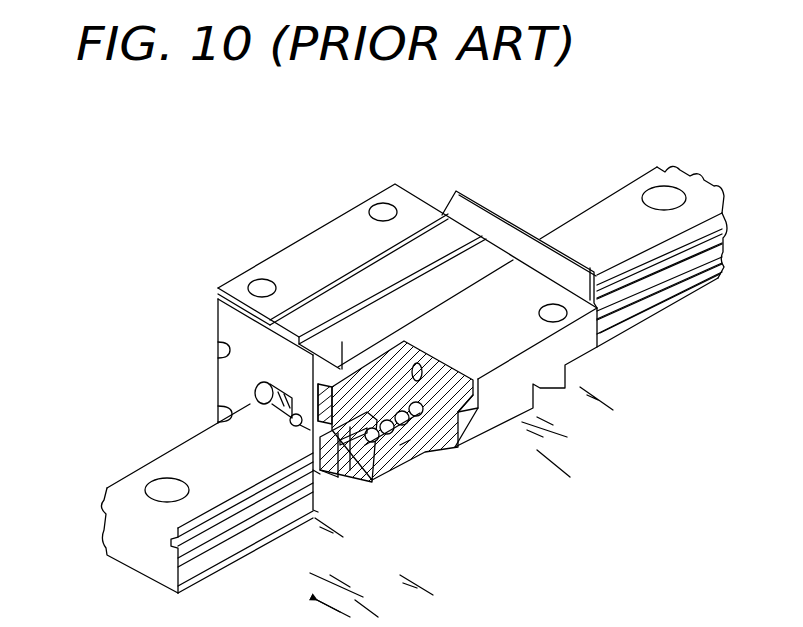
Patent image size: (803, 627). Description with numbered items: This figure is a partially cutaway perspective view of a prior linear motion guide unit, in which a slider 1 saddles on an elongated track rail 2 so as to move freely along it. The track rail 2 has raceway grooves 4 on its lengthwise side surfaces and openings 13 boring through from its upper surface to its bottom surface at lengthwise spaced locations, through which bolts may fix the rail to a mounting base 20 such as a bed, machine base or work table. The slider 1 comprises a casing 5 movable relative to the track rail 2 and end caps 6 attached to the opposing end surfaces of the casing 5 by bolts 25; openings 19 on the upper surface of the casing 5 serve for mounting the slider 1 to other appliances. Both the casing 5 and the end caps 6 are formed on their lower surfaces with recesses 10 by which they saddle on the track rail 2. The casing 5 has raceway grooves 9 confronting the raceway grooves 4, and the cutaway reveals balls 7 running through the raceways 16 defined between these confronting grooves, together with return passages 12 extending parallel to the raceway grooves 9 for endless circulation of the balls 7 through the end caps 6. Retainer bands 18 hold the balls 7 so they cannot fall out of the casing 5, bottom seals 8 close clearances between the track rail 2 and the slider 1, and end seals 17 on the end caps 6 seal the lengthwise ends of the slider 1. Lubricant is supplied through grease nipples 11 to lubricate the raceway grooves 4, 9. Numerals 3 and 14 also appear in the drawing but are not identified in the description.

The slider 1 is at (411, 184).
The track rail 2 is at (662, 232).
The track rail side surface 3 is at (658, 258).
The raceway grooves 4 is at (624, 290).
The casing 5 is at (333, 245).
The end caps 6 is at (248, 327).
The balls 7 is at (402, 445).
The bottom seals 8 is at (420, 467).
The raceway grooves 9 is at (420, 412).
The recesses 10 is at (473, 413).
The grease nipples 11 is at (258, 395).
The return passages 12 is at (445, 355).
The openings 13 is at (162, 488).
The track rail 14 is at (605, 217).
The raceways 16 is at (407, 442).
The end seals 17 is at (517, 228).
The retainer bands 18 is at (357, 480).
The openings 19 is at (381, 209).
The mounting base 20 is at (380, 572).
The bolts 25 is at (221, 345).